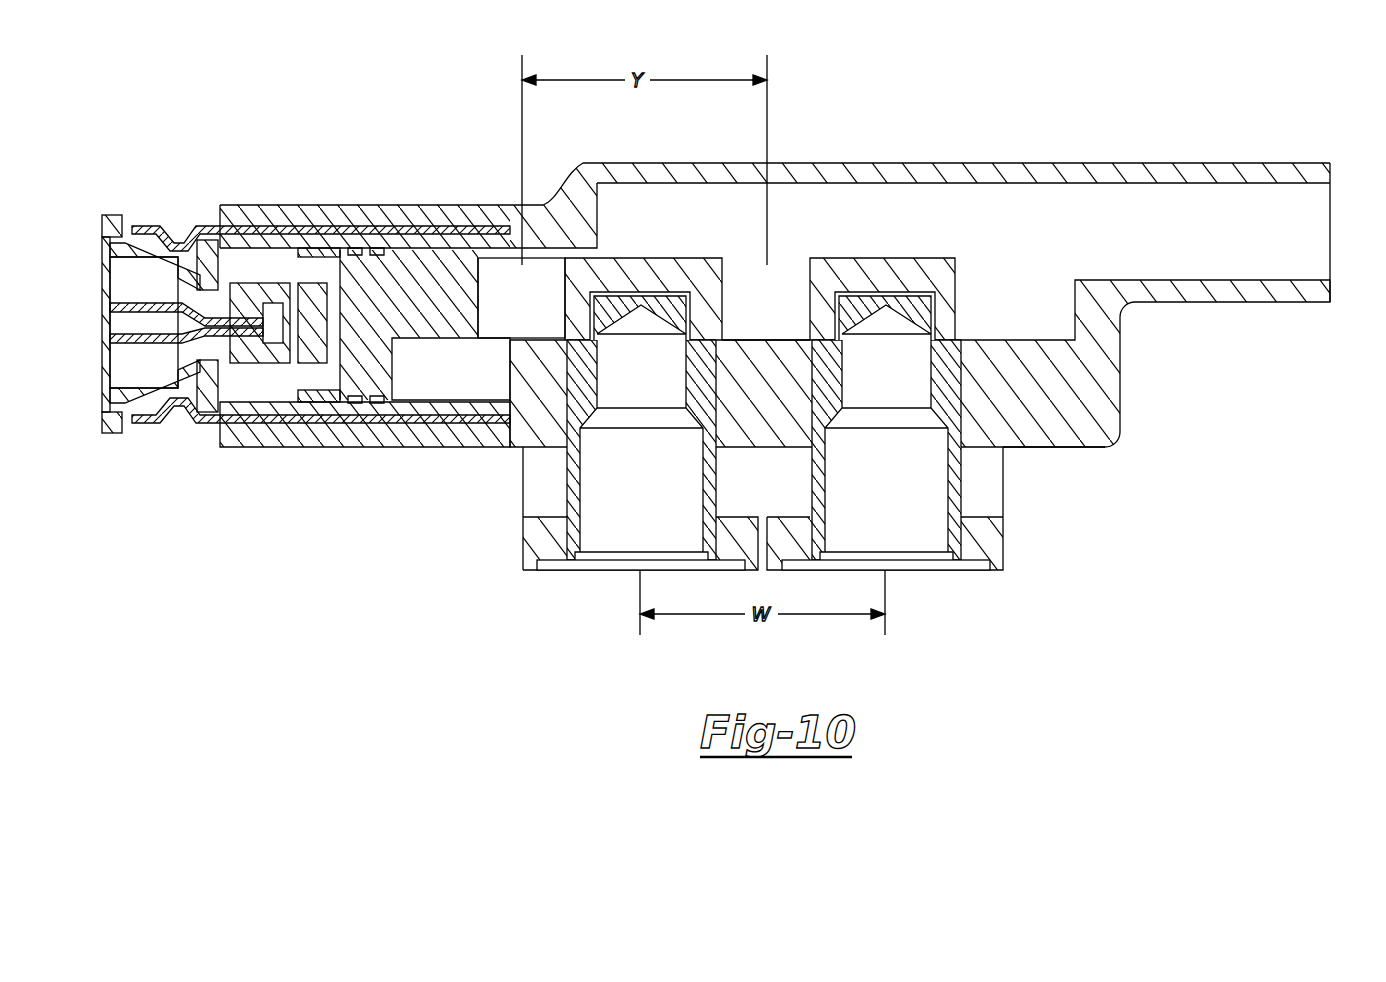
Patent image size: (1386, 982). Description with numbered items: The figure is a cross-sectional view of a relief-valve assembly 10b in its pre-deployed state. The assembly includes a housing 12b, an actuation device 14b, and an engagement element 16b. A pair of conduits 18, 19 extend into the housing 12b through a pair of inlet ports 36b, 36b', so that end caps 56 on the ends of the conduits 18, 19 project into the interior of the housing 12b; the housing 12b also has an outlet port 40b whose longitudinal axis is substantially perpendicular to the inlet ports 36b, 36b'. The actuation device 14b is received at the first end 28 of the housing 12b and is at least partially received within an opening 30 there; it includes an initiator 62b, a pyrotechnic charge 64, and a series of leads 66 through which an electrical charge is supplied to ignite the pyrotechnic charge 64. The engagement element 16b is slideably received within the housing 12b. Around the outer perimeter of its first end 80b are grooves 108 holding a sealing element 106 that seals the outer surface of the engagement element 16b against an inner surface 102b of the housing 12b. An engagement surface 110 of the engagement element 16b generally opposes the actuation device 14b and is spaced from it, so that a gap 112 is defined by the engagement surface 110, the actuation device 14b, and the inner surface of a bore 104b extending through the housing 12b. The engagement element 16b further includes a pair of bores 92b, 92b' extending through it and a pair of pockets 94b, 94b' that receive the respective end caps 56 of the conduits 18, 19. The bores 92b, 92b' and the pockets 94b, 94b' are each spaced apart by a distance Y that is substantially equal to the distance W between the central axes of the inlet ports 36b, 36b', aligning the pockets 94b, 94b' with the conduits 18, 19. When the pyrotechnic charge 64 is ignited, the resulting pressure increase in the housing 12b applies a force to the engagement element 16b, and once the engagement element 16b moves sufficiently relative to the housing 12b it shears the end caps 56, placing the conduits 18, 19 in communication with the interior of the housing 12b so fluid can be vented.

The relief-valve assembly 10b is at (1106, 94).
The housing 12b is at (858, 162).
The actuation device 14b is at (283, 284).
The engagement element 16b is at (660, 257).
The conduit 18 is at (618, 471).
The conduit 19 is at (868, 496).
The first end 28 is at (225, 213).
The opening 30 is at (256, 255).
The inlet port 36b is at (802, 438).
The inlet port 36b' is at (1147, 363).
The outlet port 40b is at (1305, 237).
The end cap 56 is at (658, 313).
The initiator 62b is at (262, 366).
The pyrotechnic charge 64 is at (316, 365).
The leads 66 is at (118, 338).
The first end 80b is at (342, 343).
The bore 92b is at (504, 224).
The bore 92b' is at (780, 225).
The pocket 94b is at (640, 230).
The pocket 94b' is at (913, 273).
The inner surface 102b is at (285, 392).
The bore 104b is at (318, 300).
The sealing element 106 is at (374, 256).
The grooves 108 is at (373, 405).
The engagement surface 110 is at (333, 380).
The gap 112 is at (333, 310).